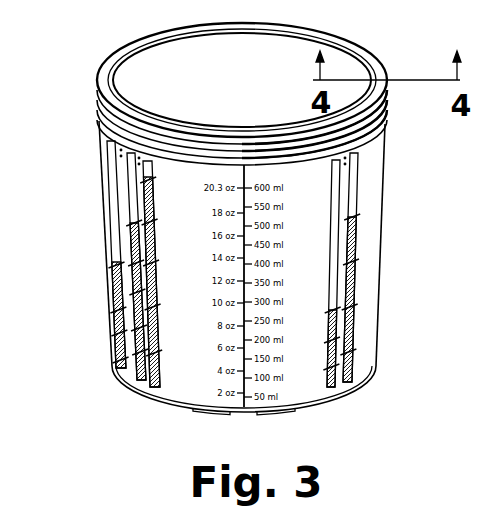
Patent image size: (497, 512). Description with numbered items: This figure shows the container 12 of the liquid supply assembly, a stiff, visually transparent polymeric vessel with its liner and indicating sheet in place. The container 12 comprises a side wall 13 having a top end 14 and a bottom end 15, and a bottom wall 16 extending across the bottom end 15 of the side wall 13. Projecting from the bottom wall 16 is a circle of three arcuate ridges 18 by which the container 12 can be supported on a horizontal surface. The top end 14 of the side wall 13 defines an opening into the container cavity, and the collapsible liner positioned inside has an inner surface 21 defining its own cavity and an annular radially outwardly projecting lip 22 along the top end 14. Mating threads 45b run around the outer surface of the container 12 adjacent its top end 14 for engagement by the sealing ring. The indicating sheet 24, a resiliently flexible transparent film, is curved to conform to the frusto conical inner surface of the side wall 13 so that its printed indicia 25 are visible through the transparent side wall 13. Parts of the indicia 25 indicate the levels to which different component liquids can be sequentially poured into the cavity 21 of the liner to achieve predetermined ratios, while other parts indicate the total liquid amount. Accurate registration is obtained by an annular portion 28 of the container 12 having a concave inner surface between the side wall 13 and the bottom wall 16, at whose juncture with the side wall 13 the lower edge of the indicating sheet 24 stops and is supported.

The container 12 is at (377, 287).
The side wall 13 is at (104, 272).
The top end 14 is at (386, 97).
The bottom end 15 is at (373, 375).
The bottom wall 16 is at (336, 403).
The arcuate ridges 18 is at (195, 411).
The inner surface of liner 21 is at (224, 95).
The lip 22 is at (369, 64).
The indicating sheet 24 is at (378, 318).
The indicia 25 is at (118, 326).
The annular portion 28 is at (136, 385).
The threads 45b is at (102, 120).